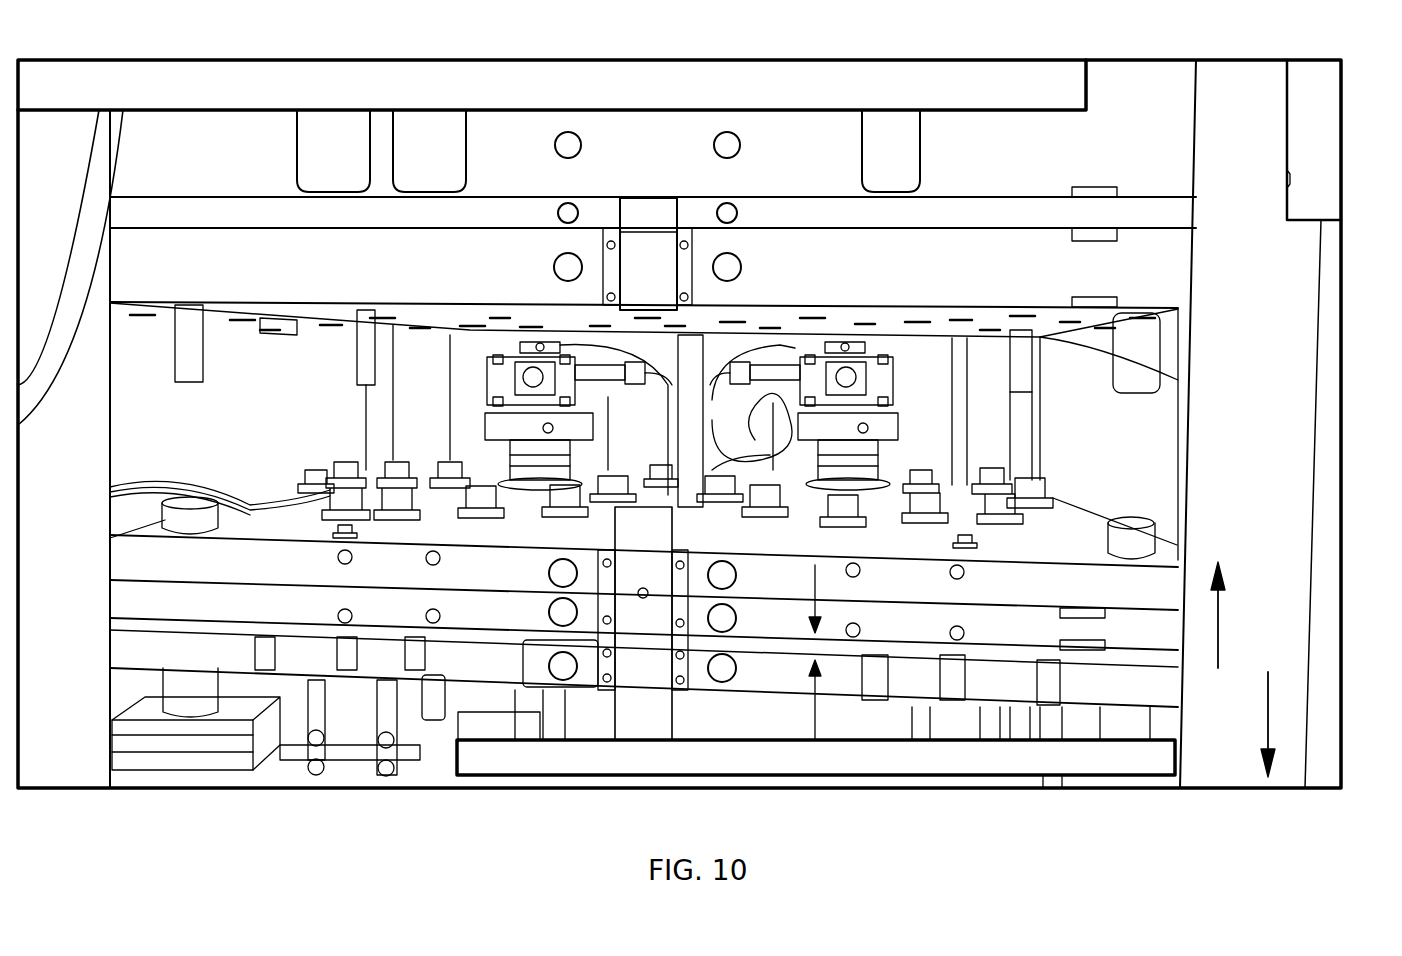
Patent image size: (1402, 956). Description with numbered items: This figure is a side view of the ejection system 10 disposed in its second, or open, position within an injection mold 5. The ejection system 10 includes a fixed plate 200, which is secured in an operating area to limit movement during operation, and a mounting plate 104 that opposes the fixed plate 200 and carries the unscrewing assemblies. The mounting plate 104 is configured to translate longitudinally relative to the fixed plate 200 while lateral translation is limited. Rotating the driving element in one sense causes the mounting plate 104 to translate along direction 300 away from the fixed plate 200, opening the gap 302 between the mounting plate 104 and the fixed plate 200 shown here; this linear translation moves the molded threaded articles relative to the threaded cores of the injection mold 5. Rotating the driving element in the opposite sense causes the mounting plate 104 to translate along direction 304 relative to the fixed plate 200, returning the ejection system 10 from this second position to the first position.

The injection mold 5 is at (677, 50).
The ejection system 10 is at (1062, 48).
The mounting plate 104 is at (255, 540).
The fixed plate 200 is at (368, 665).
The direction 300 is at (1220, 625).
The gap 302 is at (813, 722).
The direction 304 is at (1270, 714).